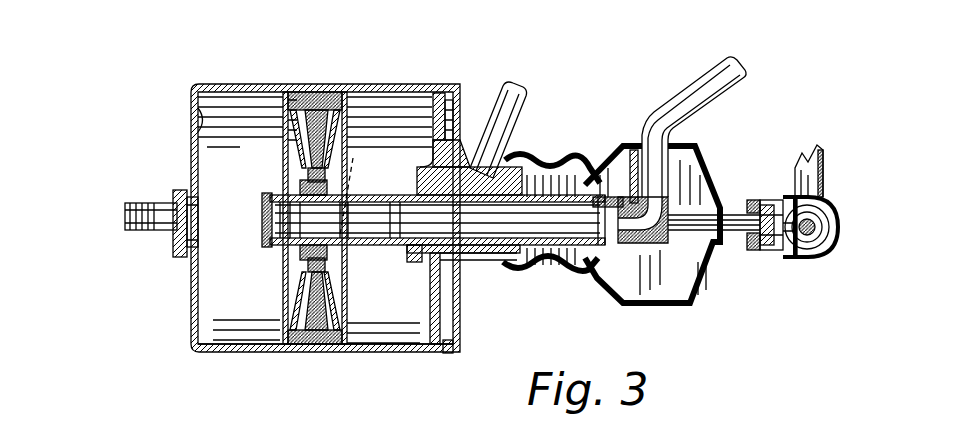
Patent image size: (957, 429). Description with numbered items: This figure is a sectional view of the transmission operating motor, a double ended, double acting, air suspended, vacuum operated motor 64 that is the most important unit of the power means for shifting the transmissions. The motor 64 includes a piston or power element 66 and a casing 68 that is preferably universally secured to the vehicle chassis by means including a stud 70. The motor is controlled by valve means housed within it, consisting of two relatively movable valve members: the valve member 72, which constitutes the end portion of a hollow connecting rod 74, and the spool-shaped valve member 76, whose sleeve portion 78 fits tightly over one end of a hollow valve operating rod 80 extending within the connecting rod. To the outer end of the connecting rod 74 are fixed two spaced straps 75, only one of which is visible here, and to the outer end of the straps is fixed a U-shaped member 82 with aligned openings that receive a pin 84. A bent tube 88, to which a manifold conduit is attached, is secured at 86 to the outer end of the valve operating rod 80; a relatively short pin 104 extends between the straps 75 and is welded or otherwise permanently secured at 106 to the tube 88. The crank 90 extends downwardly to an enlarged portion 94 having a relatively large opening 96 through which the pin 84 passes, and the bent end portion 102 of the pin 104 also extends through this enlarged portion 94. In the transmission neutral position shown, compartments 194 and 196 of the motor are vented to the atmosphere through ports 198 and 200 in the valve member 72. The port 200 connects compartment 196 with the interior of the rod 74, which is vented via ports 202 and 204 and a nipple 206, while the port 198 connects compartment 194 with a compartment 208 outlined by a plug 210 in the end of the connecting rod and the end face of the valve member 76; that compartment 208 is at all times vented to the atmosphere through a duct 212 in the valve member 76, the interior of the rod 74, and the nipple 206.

The vacuum operated motor 64 is at (203, 85).
The piston 66 is at (340, 117).
The casing 68 is at (387, 357).
The stud 70 is at (133, 203).
The valve member 72 is at (293, 263).
The hollow connecting rod 74 is at (393, 247).
The straps 75 is at (697, 197).
The valve member 76 is at (300, 197).
The sleeve portion 78 is at (362, 198).
The hollow valve operating rod 80 is at (460, 258).
The U-shaped member 82 is at (770, 207).
The pin 84 is at (812, 237).
The connection of bent tube to valve operating rod 86 is at (632, 185).
The bent tube 88 is at (655, 115).
The crank 90 is at (817, 170).
The enlarged portion 94 is at (778, 250).
The opening 96 is at (818, 218).
The bent end portion 102 is at (778, 200).
The pin 104 is at (700, 228).
The securing point of pin to tube 106 is at (657, 243).
The compartment 194 is at (237, 100).
The compartment 196 is at (390, 100).
The port 198 is at (287, 257).
The port 200 is at (338, 247).
The port 202 is at (565, 163).
The port 204 is at (570, 250).
The nipple 206 is at (522, 98).
The compartment 208 is at (267, 195).
The plug 210 is at (273, 220).
The duct 212 is at (360, 186).